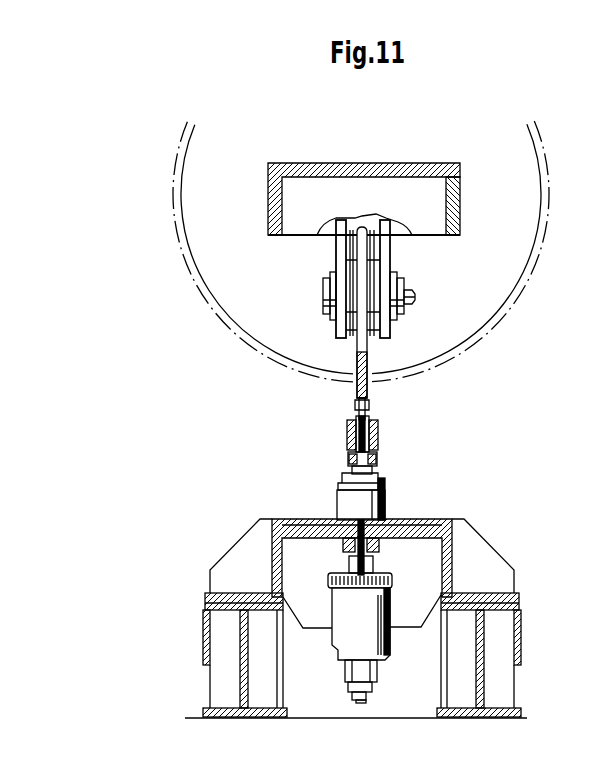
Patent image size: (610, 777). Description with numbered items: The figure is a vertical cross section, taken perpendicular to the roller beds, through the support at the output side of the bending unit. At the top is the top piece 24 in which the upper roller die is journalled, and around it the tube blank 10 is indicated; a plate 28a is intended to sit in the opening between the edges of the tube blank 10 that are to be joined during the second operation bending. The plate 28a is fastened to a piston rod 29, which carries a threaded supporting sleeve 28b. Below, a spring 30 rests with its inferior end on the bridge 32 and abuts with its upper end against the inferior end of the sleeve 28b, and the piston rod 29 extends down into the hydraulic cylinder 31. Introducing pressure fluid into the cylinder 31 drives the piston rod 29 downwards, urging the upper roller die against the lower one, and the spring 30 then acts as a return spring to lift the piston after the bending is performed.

The tube blank 10 is at (278, 346).
The top piece 24 is at (268, 191).
The plate 28a is at (367, 382).
The threaded supporting sleeve 28b is at (378, 434).
The piston rod 29 is at (378, 548).
The spring 30 is at (386, 488).
The hydraulic cylinder 31 is at (390, 605).
The bridge 32 is at (413, 511).